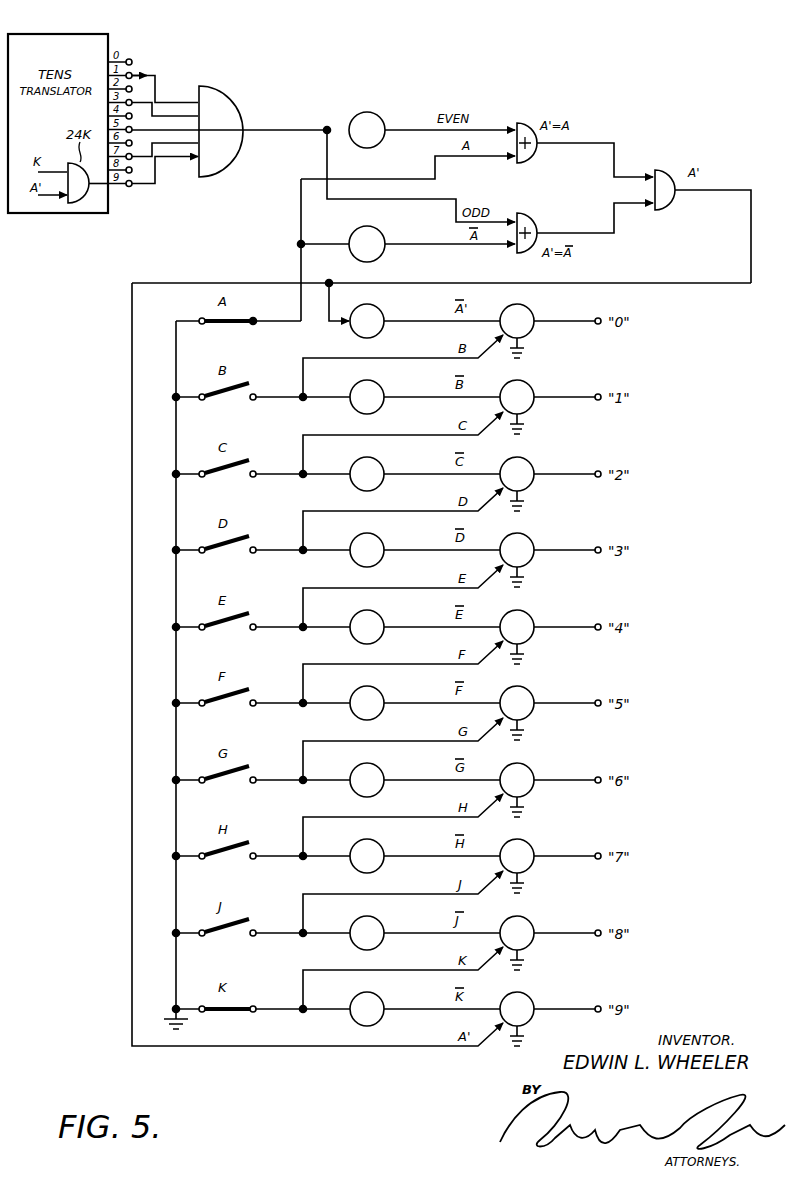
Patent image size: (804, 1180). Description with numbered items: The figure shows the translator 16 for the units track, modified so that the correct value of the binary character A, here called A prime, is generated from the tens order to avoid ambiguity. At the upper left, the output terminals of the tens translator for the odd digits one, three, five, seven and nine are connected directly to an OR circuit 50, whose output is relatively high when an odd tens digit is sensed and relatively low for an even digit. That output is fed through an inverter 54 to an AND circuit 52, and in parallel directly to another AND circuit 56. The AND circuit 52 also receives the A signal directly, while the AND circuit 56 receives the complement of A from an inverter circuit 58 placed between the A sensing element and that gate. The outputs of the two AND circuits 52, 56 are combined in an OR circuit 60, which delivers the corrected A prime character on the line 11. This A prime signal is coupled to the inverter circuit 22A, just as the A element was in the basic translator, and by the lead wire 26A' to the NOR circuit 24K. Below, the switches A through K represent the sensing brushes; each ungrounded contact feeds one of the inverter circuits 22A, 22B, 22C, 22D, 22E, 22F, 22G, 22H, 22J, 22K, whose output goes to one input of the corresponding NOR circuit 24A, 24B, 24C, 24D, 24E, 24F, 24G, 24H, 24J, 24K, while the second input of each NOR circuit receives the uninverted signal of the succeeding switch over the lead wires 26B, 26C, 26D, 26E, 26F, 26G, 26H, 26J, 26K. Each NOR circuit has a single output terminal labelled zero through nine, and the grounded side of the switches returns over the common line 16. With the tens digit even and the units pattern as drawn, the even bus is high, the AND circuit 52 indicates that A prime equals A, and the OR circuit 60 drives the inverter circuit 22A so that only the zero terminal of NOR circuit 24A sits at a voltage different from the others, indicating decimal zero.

The OR circuit 50 is at (228, 125).
The AND circuit 52 is at (525, 123).
The inverter 54 is at (380, 114).
The AND circuit 56 is at (530, 213).
The inverter circuit 58 is at (382, 232).
The OR circuit 60 is at (667, 170).
The A' signal line 11 is at (337, 276).
The translator 16 is at (288, 1052).
The inverter circuit 22A is at (386, 309).
The inverter circuit 22B is at (386, 385).
The inverter circuit 22C is at (386, 462).
The inverter circuit 22D is at (386, 538).
The inverter circuit 22E is at (386, 615).
The inverter circuit 22F is at (386, 691).
The inverter circuit 22G is at (386, 768).
The inverter circuit 22H is at (386, 844).
The inverter circuit 22J is at (386, 921).
The inverter circuit 22K is at (386, 997).
The NOR circuit 24A is at (530, 308).
The NOR circuit 24B is at (530, 384).
The NOR circuit 24C is at (530, 461).
The NOR circuit 24D is at (530, 537).
The NOR circuit 24E is at (530, 614).
The NOR circuit 24F is at (530, 690).
The NOR circuit 24G is at (530, 767).
The NOR circuit 24H is at (530, 843).
The NOR circuit 24J is at (530, 920).
The NOR circuit 24K is at (530, 996).
The lead wire 26A' is at (403, 1034).
The lead wire 26B is at (362, 358).
The lead wire 26C is at (362, 435).
The lead wire 26D is at (362, 511).
The lead wire 26E is at (362, 588).
The lead wire 26F is at (362, 664).
The lead wire 26G is at (362, 741).
The lead wire 26H is at (362, 817).
The lead wire 26J is at (362, 894).
The lead wire 26K is at (362, 970).